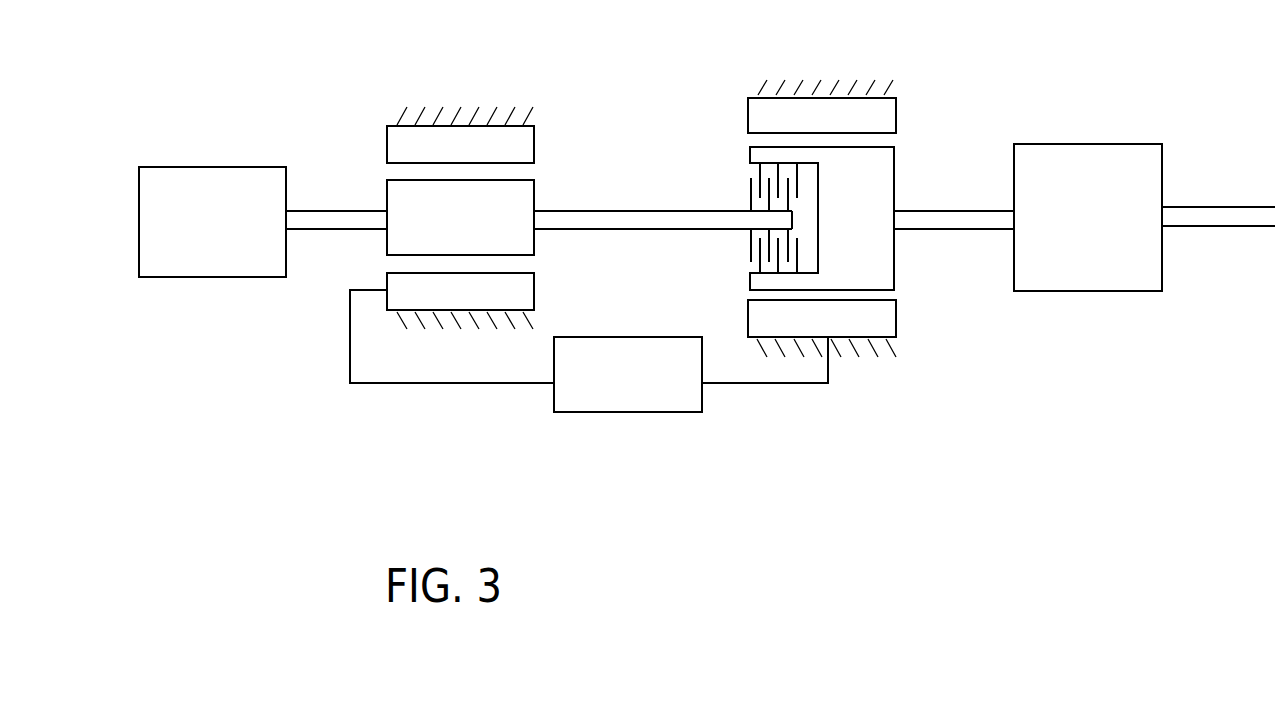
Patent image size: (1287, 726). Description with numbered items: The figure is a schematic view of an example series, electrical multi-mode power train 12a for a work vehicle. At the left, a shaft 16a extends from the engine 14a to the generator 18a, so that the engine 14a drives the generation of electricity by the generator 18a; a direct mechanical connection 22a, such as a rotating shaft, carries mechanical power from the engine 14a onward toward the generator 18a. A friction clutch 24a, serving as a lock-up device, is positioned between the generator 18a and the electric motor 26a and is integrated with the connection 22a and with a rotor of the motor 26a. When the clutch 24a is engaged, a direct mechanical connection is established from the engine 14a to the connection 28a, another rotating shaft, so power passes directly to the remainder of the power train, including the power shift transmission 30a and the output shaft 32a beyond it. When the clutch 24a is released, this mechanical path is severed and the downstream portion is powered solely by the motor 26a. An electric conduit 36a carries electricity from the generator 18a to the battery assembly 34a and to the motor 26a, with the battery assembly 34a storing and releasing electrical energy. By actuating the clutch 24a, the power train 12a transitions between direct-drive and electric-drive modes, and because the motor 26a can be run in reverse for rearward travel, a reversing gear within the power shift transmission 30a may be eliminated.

The power train 12a is at (1262, 140).
The engine 14a is at (222, 167).
The shaft 16a is at (350, 230).
The generator 18a is at (376, 141).
The direct mechanical connection 22a is at (708, 210).
The friction clutch 24a is at (726, 151).
The electric motor 26a is at (897, 115).
The connection 28a is at (966, 229).
The power shift transmission 30a is at (1088, 144).
The output shaft 32a is at (1263, 228).
The battery assembly 34a is at (617, 337).
The electric conduit 36a is at (774, 383).